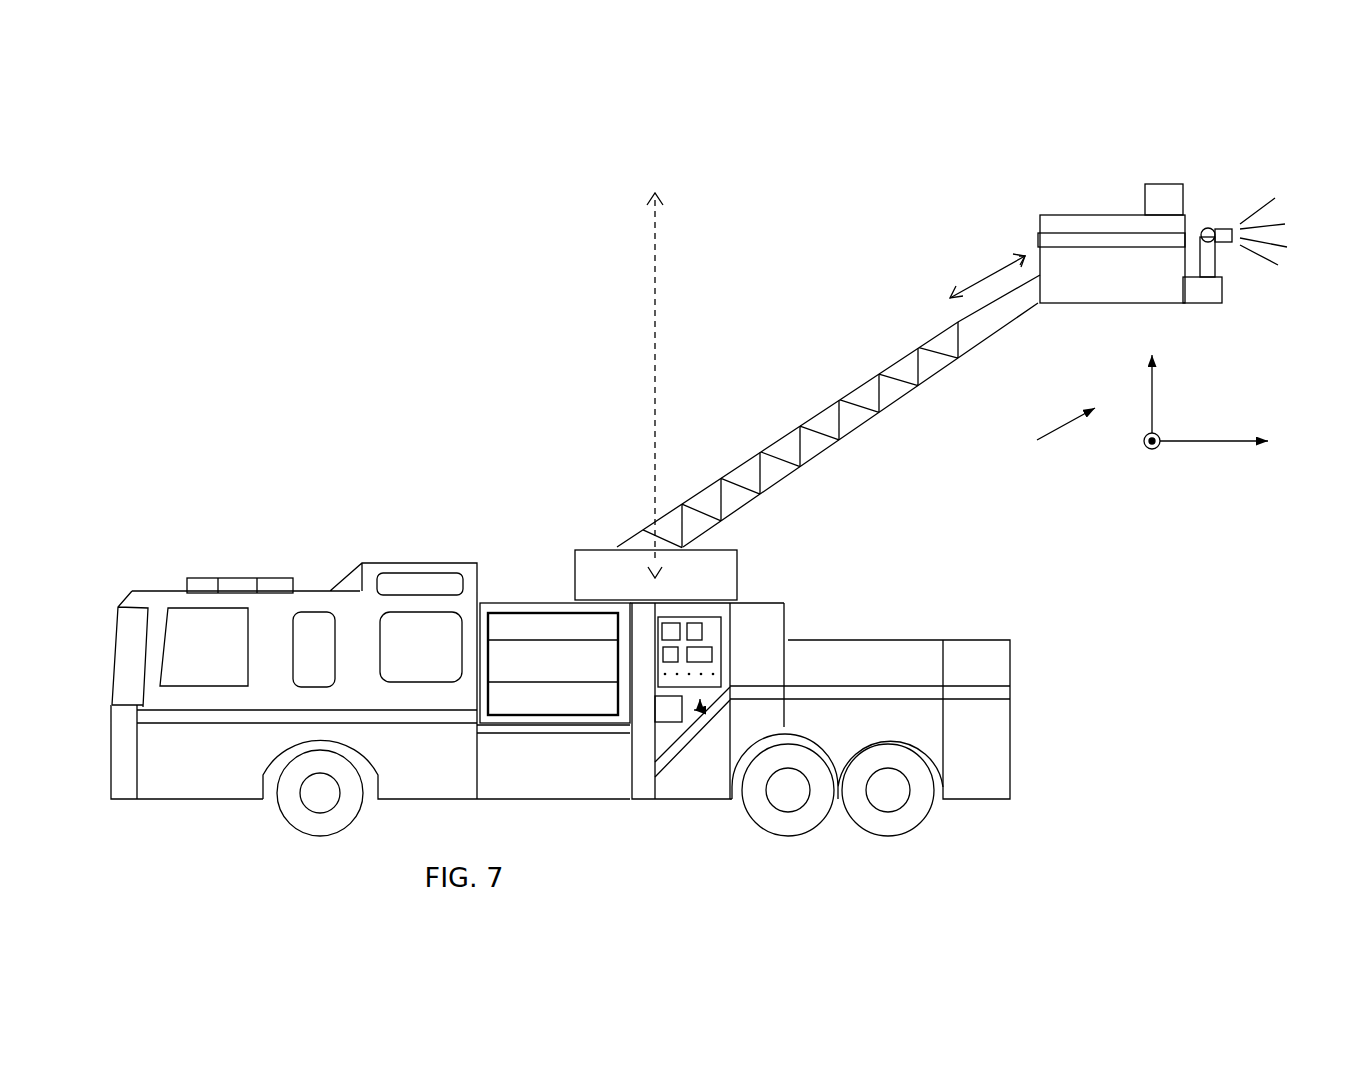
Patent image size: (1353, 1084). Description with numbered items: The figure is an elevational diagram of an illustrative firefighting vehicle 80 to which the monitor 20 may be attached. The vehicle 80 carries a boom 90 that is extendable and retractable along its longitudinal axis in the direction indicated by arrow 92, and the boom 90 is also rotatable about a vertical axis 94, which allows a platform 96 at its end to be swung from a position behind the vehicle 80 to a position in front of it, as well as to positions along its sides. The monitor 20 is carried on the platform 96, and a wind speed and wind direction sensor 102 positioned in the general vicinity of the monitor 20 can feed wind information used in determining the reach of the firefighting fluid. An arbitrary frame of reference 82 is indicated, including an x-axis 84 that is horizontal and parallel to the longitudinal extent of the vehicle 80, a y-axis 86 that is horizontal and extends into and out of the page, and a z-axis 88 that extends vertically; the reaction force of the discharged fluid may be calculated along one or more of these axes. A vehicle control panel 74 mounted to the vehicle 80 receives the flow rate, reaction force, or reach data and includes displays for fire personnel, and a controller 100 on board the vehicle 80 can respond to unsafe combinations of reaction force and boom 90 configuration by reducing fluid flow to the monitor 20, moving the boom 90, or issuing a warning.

The monitor 20 is at (1210, 260).
The vehicle control panel 74 is at (717, 633).
The firefighting vehicle 80 is at (238, 575).
The frame of reference 82 is at (1048, 438).
The x-axis 84 is at (1207, 444).
The y-axis 86 is at (1152, 382).
The z-axis 88 is at (1150, 448).
The boom 90 is at (757, 442).
The arrow 92 is at (977, 280).
The vertical axis 94 is at (655, 255).
The platform 96 is at (1095, 213).
The controller 100 is at (665, 722).
The wind speed and wind direction sensor 102 is at (1160, 182).